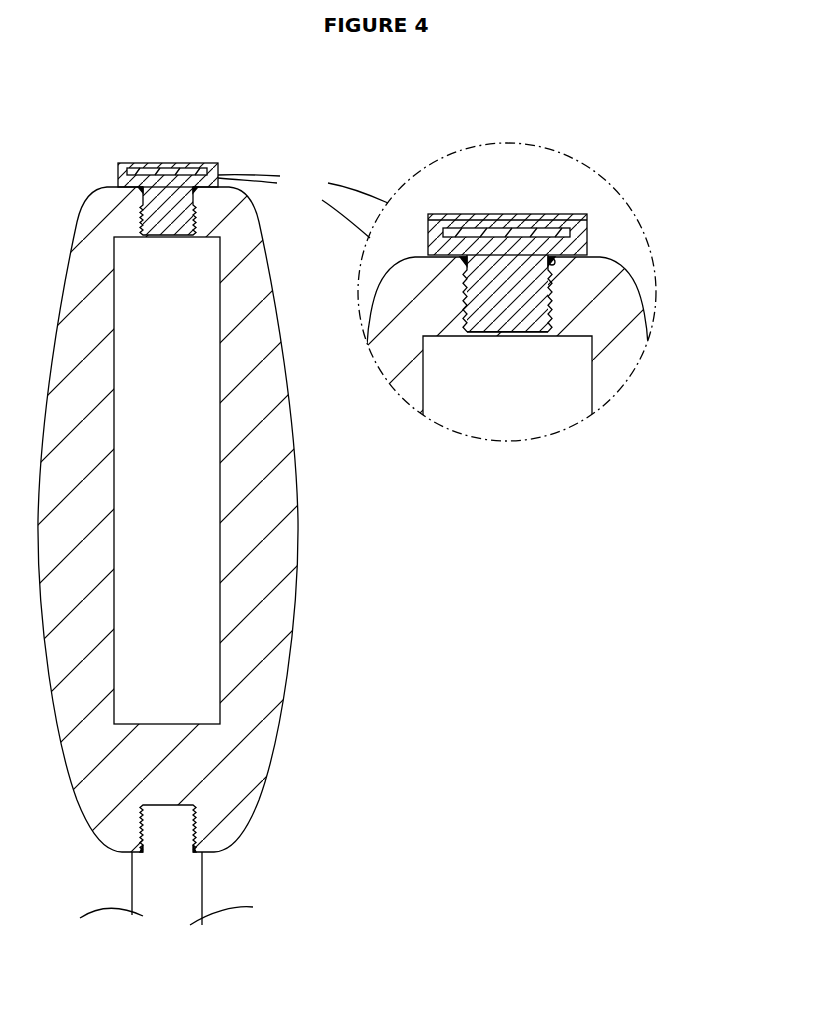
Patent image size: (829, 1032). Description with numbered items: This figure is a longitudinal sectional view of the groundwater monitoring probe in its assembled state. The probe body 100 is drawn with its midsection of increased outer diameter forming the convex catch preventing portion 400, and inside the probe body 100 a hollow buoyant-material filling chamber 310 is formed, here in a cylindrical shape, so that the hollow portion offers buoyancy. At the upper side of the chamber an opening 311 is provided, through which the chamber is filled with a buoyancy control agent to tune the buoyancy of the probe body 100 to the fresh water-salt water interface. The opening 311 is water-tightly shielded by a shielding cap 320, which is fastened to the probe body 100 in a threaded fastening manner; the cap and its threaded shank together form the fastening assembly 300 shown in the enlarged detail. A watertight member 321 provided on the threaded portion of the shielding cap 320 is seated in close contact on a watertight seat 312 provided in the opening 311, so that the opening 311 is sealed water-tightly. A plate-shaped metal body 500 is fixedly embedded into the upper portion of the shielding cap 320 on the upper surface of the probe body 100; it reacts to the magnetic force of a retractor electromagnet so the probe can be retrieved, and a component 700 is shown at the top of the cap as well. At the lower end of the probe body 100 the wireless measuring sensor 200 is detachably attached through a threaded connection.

The probe body 100 is at (275, 693).
The wireless measuring sensor 200 is at (197, 887).
The fastening member 300 is at (339, 355).
The buoyant-material filling chamber 310 is at (185, 436).
The opening 311 is at (473, 333).
The watertight seat 312 is at (548, 262).
The shielding cap 320 is at (137, 168).
The watertight member 321 is at (551, 263).
The catch preventing portion 400 is at (298, 512).
The metal body 500 is at (487, 230).
The sensor plate 700 is at (540, 215).